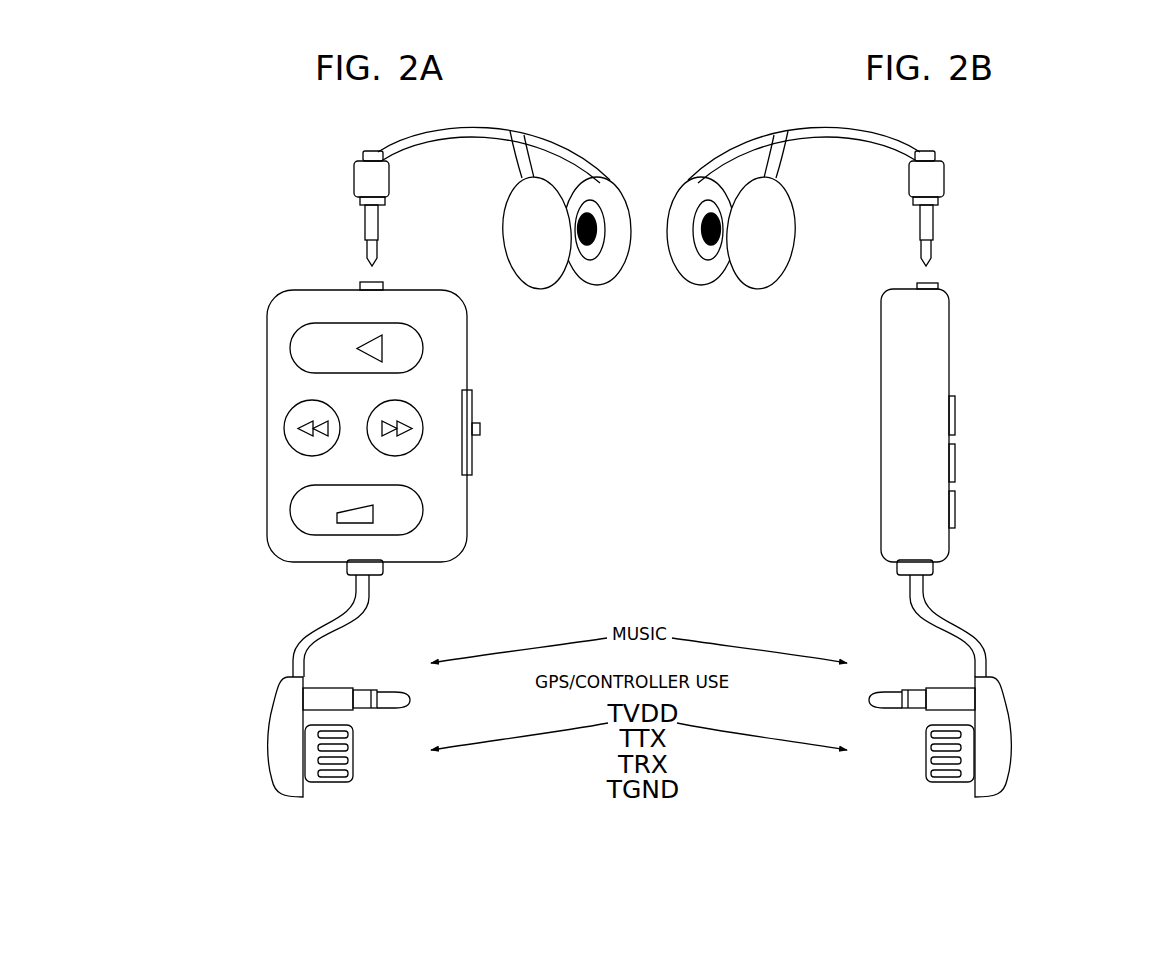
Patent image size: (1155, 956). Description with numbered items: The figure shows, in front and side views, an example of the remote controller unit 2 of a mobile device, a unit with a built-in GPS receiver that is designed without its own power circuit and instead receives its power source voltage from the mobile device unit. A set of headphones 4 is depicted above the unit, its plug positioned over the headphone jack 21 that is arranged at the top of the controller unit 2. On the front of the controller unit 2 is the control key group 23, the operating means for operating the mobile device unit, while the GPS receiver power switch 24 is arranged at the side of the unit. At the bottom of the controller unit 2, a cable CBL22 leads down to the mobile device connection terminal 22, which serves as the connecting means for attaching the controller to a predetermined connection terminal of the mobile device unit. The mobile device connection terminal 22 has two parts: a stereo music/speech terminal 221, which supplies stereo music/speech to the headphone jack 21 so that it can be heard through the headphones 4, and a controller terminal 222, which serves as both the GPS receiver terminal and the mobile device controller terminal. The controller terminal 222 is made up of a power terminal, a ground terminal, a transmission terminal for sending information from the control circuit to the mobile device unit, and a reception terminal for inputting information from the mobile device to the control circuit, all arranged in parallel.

In FIG. 2A, the remote controller unit 2 is at (252, 403).
In FIG. 2B, the remote controller unit 2 is at (962, 351).
In FIG. 2A, the headphones 4 is at (604, 293).
In FIG. 2B, the headphones 4 is at (701, 293).
In FIG. 2A, the headphone jack 21 is at (384, 283).
In FIG. 2B, the headphone jack 21 is at (940, 283).
In FIG. 2A, the mobile device connection terminal 22 is at (254, 731).
In FIG. 2B, the mobile device connection terminal 22 is at (1025, 733).
In FIG. 2A, the control key group 23 is at (434, 350).
In FIG. 2A, the GPS receiver power switch 24 is at (470, 453).
In FIG. 2A, the stereo music/speech terminal 221 is at (343, 688).
In FIG. 2B, the stereo music/speech terminal 221 is at (942, 688).
In FIG. 2A, the controller terminal 222 is at (357, 725).
In FIG. 2B, the controller terminal 222 is at (922, 725).
In FIG. 2A, the cable CBL22 is at (368, 598).
In FIG. 2B, the cable CBL22 is at (962, 618).